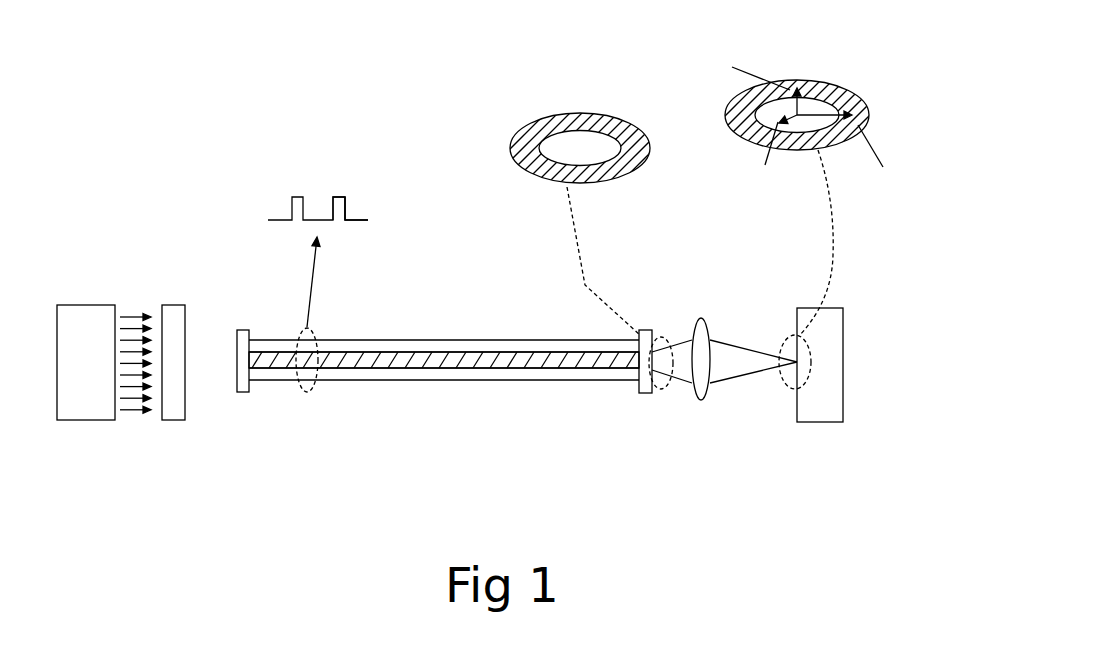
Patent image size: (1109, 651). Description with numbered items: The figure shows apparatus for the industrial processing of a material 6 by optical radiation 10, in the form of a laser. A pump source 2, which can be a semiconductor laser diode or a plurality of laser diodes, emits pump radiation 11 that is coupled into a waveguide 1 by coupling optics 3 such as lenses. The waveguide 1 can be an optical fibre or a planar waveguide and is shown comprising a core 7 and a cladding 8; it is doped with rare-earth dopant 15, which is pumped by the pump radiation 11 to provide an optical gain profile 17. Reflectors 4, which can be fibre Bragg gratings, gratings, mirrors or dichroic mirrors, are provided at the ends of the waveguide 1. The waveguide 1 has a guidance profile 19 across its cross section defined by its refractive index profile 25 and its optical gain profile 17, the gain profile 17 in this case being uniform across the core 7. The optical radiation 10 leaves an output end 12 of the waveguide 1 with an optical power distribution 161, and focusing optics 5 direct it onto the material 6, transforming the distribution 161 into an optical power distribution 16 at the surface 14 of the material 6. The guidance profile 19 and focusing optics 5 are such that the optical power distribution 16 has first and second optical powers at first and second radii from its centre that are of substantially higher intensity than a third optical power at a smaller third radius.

The waveguide 1 is at (444, 330).
The pump source 2 is at (87, 305).
The coupling optics 3 is at (173, 305).
The reflectors 4 is at (244, 328).
The focusing optics 5 is at (702, 318).
The material 6 is at (825, 308).
The core 7 is at (402, 350).
The cladding 8 is at (483, 340).
The optical radiation 10 is at (738, 347).
The pump radiation 11 is at (133, 410).
The output end 12 is at (640, 375).
The surface 14 is at (797, 377).
The rare-earth dopant 15 is at (447, 372).
The optical power distribution 16 is at (828, 85).
The optical power distribution 161 is at (520, 132).
The optical gain profile 17 is at (346, 197).
The guidance profile 19 is at (290, 205).
The refractive index profile 25 is at (348, 212).